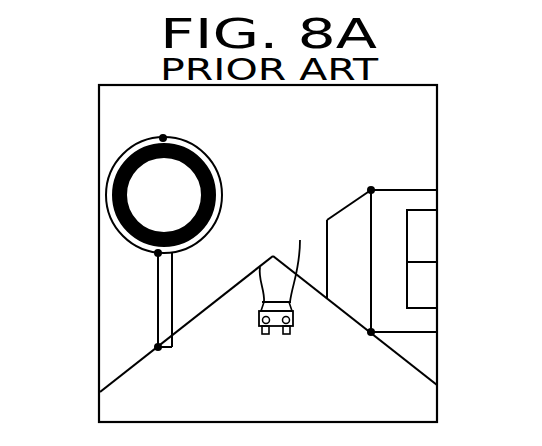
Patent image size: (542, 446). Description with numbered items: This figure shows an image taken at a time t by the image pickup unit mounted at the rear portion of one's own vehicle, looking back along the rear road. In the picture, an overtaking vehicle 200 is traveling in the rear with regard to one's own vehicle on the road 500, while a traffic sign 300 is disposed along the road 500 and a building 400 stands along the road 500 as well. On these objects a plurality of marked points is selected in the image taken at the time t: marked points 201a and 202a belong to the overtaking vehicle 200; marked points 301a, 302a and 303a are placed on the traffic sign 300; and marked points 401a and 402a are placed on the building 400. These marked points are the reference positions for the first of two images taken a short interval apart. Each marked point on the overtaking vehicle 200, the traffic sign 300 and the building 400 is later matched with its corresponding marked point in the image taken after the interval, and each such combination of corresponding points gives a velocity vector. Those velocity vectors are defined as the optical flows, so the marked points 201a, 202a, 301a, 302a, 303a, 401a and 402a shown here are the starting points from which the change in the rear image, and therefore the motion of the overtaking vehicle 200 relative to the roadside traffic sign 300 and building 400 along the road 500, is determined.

The overtaking vehicle 200 is at (296, 322).
The marked point 201a is at (258, 268).
The marked point 202a is at (300, 240).
The traffic sign 300 is at (207, 158).
The marked point 301a is at (164, 137).
The marked point 302a is at (158, 254).
The marked point 303a is at (158, 347).
The building 400 is at (408, 190).
The marked point 401a is at (372, 188).
The marked point 402a is at (373, 334).
The road 500 is at (416, 371).